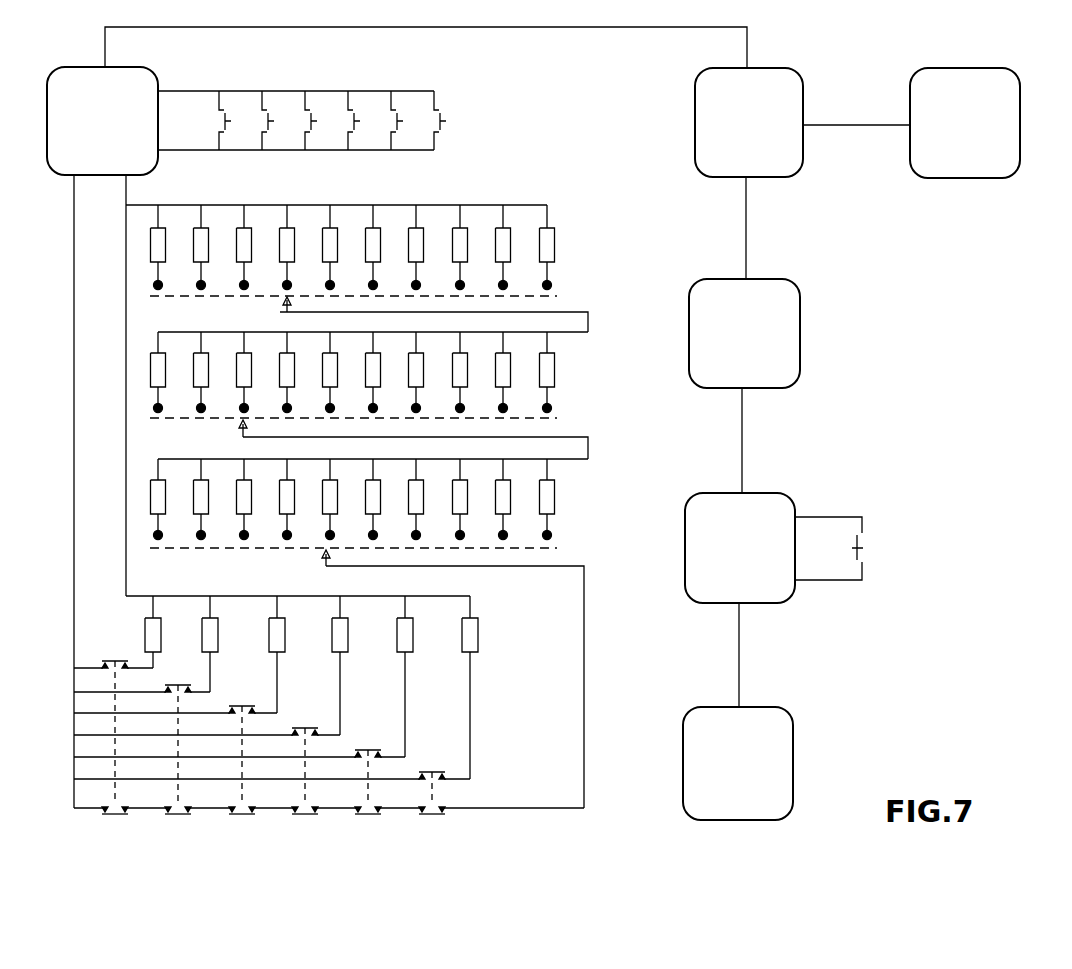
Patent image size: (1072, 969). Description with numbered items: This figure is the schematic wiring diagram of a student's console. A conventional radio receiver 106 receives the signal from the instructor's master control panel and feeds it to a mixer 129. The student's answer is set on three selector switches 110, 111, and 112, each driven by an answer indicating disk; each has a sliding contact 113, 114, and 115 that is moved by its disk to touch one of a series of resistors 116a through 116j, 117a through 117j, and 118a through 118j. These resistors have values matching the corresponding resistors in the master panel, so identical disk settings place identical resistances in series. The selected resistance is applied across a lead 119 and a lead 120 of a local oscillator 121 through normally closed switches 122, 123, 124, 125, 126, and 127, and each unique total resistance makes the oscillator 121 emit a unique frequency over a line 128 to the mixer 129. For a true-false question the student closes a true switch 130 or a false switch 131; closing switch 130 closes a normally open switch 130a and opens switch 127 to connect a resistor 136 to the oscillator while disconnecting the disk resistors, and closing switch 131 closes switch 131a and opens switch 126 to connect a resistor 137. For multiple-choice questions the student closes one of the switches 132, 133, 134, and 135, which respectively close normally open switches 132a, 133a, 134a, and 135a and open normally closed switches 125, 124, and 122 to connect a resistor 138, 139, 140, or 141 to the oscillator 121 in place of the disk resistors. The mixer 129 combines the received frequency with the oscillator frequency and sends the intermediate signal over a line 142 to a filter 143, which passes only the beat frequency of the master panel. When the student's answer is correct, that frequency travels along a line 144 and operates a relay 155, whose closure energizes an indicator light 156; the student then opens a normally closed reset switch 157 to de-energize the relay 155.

The radio receiver 106 is at (1008, 76).
The selector switch 110 is at (382, 493).
The selector switch 111 is at (396, 364).
The selector switch 112 is at (381, 242).
The sliding contact 113 is at (326, 566).
The sliding contact 114 is at (243, 437).
The sliding contact 115 is at (280, 312).
The resistor 116a is at (150, 498).
The resistor 116j is at (554, 496).
The resistor 117a is at (163, 365).
The resistor 117j is at (554, 368).
The resistor 118a is at (163, 242).
The resistor 118j is at (554, 240).
The lead 119 is at (126, 187).
The lead 120 is at (74, 206).
The local oscillator 121 is at (148, 79).
The normally closed switch 122 is at (434, 810).
The normally closed switch 123 is at (370, 810).
The normally closed switch 124 is at (307, 810).
The normally closed switch 125 is at (244, 810).
The normally closed switch 126 is at (180, 810).
The normally closed switch 127 is at (117, 810).
The line 128 is at (712, 28).
The mixer 129 is at (790, 78).
The true switch 130 is at (226, 113).
The false switch 131 is at (269, 113).
The switch 132 is at (312, 113).
The switch 133 is at (355, 113).
The switch 134 is at (398, 113).
The switch 135 is at (442, 118).
The normally open switch 130a is at (115, 661).
The normally open switch 131a is at (178, 685).
The normally open switch 132a is at (242, 706).
The normally open switch 133a is at (305, 728).
The normally open switch 134a is at (368, 750).
The normally open switch 135a is at (432, 772).
The resistor 136 is at (160, 632).
The resistor 137 is at (217, 632).
The resistor 138 is at (284, 632).
The resistor 139 is at (347, 632).
The resistor 140 is at (412, 632).
The resistor 141 is at (477, 632).
The line 142 is at (746, 214).
The filter 143 is at (798, 302).
The line 144 is at (742, 440).
The relay 155 is at (785, 498).
The indicator light 156 is at (785, 717).
The reset switch 157 is at (862, 553).